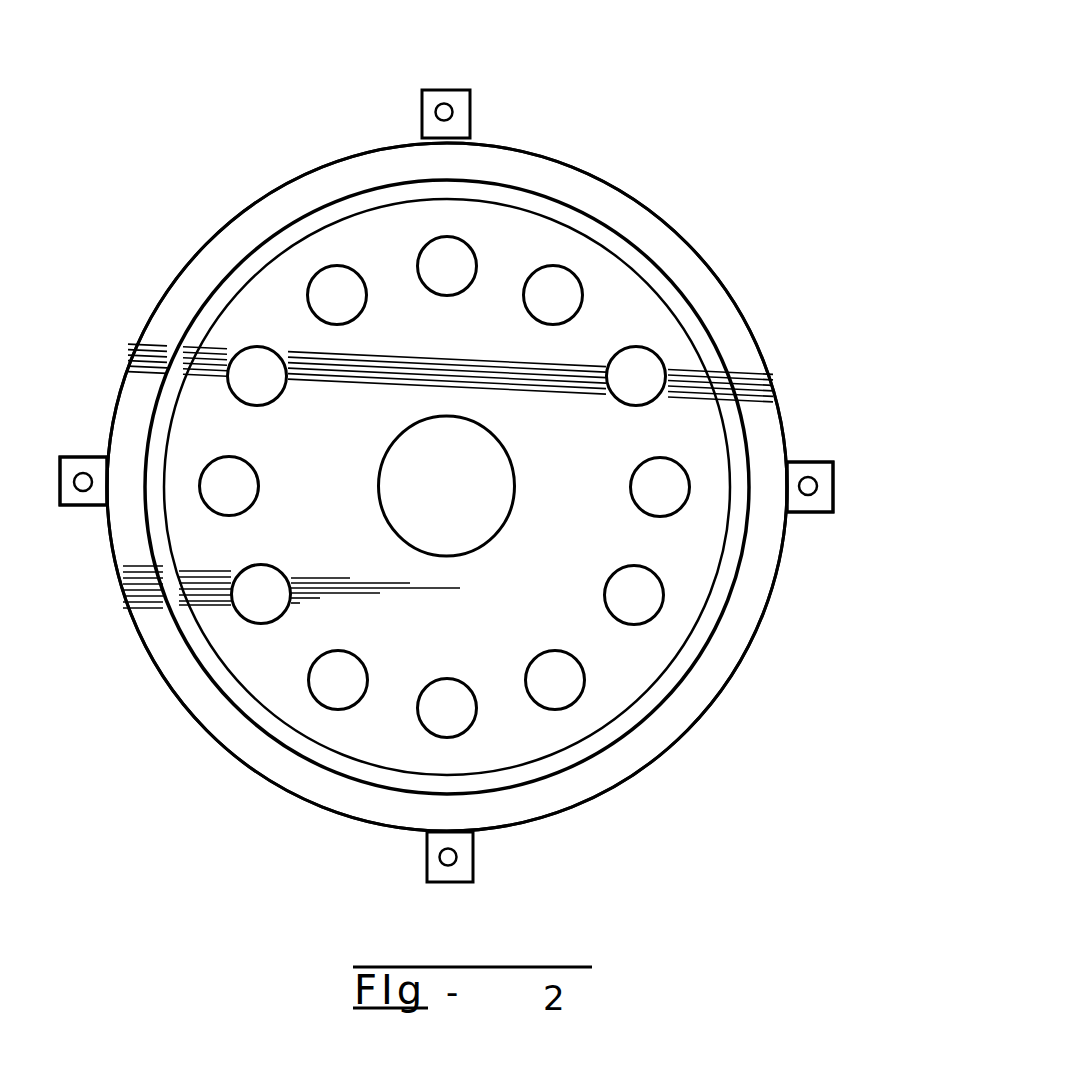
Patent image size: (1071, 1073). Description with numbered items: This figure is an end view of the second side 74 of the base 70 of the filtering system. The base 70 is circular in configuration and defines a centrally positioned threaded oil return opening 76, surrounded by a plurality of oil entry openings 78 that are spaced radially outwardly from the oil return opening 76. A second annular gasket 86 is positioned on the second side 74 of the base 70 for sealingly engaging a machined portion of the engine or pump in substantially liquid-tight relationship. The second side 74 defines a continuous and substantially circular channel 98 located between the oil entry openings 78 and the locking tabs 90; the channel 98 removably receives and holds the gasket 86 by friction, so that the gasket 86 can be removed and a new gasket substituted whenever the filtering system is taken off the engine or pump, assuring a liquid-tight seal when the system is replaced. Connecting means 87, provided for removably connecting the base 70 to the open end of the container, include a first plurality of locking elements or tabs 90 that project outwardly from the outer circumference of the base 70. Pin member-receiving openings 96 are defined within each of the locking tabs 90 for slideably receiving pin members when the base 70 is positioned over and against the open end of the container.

The base 70 is at (800, 78).
The second side 74 is at (608, 687).
The threaded oil return opening 76 is at (445, 417).
The oil entry openings 78 is at (634, 476).
The second annular gasket 86 is at (558, 773).
The connecting means 87 is at (420, 98).
The locking tabs 90 is at (61, 459).
The pin member-receiving openings 96 is at (80, 491).
The channel 98 is at (722, 619).